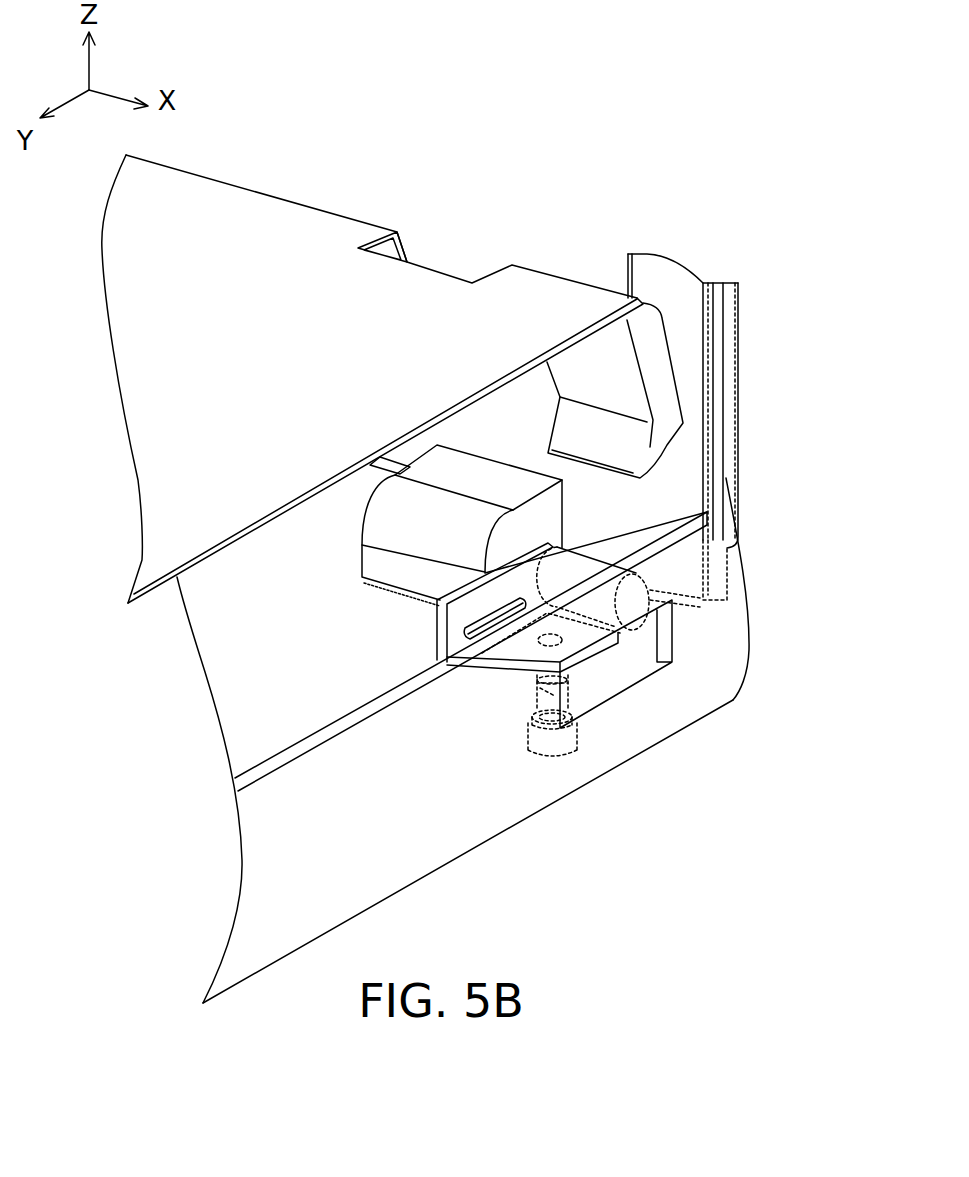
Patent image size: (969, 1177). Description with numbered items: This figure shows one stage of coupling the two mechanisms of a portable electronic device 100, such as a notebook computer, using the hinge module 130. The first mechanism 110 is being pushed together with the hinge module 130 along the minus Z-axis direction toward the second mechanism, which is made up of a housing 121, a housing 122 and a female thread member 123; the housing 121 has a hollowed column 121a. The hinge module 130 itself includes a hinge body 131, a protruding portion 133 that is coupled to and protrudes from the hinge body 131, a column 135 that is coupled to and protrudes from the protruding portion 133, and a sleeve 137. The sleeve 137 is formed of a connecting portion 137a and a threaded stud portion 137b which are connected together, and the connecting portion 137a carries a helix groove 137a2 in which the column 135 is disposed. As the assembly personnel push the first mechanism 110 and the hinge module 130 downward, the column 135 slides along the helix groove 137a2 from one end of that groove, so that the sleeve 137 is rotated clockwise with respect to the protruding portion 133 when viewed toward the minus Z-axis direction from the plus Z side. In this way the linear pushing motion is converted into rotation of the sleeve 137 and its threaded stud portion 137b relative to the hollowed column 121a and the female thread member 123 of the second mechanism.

The portable electronic device 100 is at (814, 31).
The first mechanism 110 is at (733, 432).
The housing 121 is at (745, 607).
The hollowed column 121a is at (548, 745).
The housing 122 is at (152, 586).
The female thread member 123 is at (550, 738).
The hinge module 130 is at (603, 513).
The hinge body 131 is at (643, 606).
The protruding portion 133 is at (565, 673).
The column 135 is at (535, 683).
The sleeve 137 is at (652, 823).
The connecting portion 137a is at (562, 692).
The helix groove 137a2 is at (533, 702).
The threaded stud portion 137b is at (550, 730).